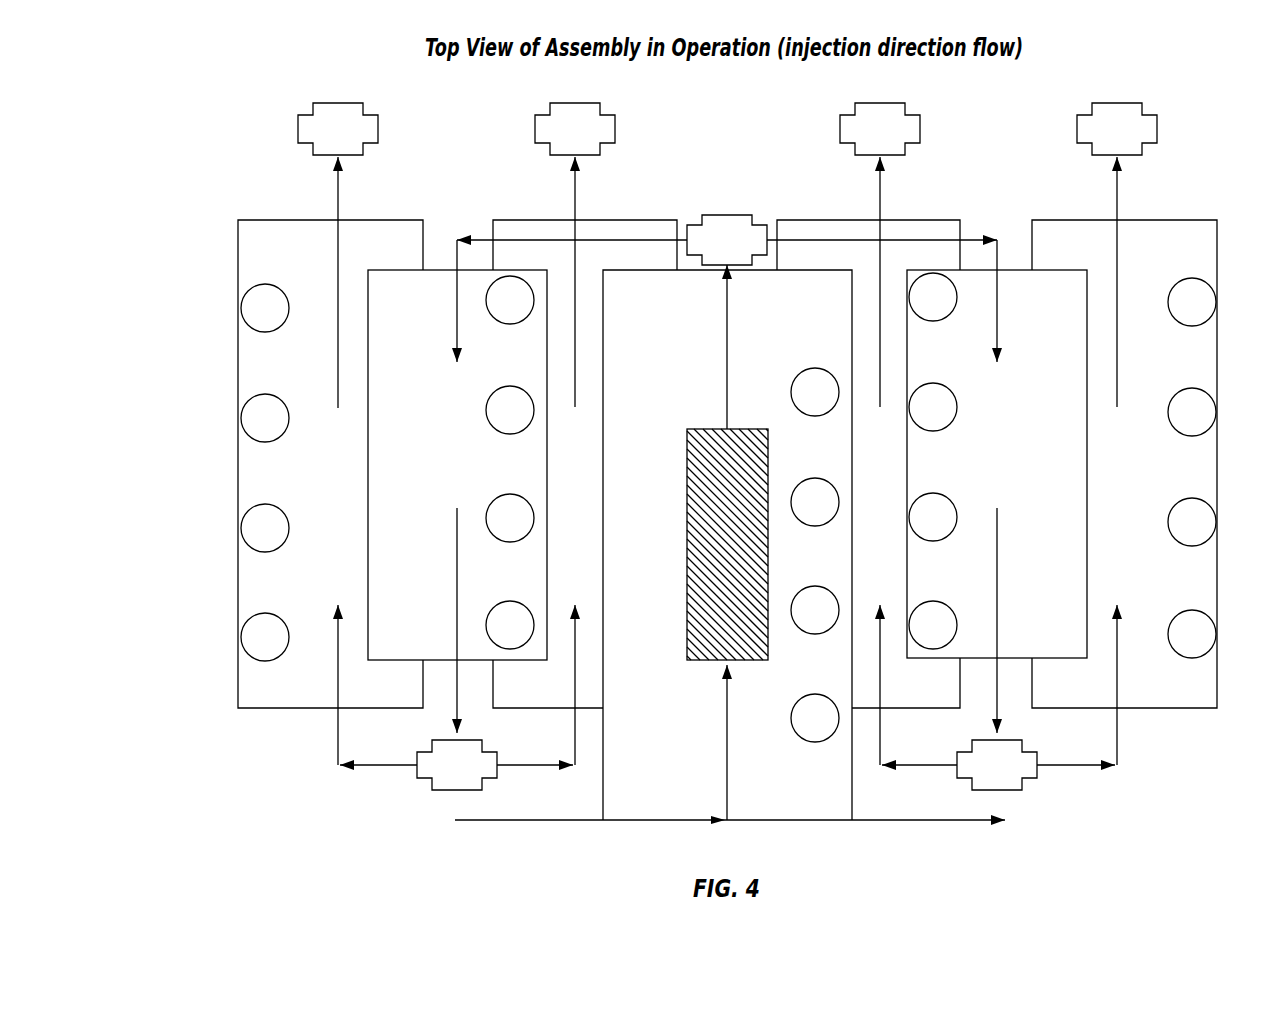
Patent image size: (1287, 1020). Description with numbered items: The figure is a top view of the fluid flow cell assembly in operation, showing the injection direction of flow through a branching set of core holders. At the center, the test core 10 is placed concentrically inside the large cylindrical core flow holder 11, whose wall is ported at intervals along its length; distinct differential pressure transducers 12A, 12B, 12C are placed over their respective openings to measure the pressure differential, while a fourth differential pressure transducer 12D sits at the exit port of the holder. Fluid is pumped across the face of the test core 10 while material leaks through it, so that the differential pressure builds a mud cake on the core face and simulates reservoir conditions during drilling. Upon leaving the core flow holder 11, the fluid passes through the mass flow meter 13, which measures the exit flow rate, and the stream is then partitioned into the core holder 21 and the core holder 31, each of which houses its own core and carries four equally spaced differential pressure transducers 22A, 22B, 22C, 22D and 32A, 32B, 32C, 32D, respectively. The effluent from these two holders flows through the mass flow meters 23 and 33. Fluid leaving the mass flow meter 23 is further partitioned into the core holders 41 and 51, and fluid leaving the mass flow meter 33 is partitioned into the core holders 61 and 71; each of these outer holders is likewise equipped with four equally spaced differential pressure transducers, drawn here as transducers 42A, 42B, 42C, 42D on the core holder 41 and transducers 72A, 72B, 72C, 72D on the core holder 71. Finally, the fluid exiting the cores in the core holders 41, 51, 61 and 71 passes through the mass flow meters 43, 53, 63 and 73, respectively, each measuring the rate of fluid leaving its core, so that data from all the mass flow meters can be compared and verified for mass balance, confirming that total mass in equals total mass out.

The test core 10 is at (740, 557).
The core flow holder 11 is at (672, 387).
The differential pressure transducer 12A is at (823, 369).
The differential pressure transducer 12B is at (827, 480).
The differential pressure transducer 12C is at (828, 633).
The differential pressure transducer 12D is at (828, 741).
The mass flow meter 13 is at (723, 215).
The core holder 21 is at (470, 478).
The differential pressure transducer 22A is at (487, 306).
The differential pressure transducer 22B is at (487, 406).
The differential pressure transducer 22C is at (487, 530).
The differential pressure transducer 22D is at (488, 632).
The mass flow meter 23 is at (444, 790).
The core holder 31 is at (1010, 478).
The differential pressure transducer 32A is at (940, 320).
The differential pressure transducer 32B is at (936, 430).
The differential pressure transducer 32C is at (940, 540).
The differential pressure transducer 32D is at (940, 604).
The mass flow meter 33 is at (1010, 790).
The core holder 41 is at (342, 478).
The differential pressure transducer 42A is at (245, 292).
The differential pressure transducer 42B is at (245, 402).
The differential pressure transducer 42C is at (245, 548).
The differential pressure transducer 42D is at (245, 656).
The mass flow meter 43 is at (325, 103).
The core holder 51 is at (592, 478).
The mass flow meter 53 is at (563, 103).
The core holder 61 is at (890, 478).
The mass flow meter 63 is at (890, 103).
The core holder 71 is at (1140, 475).
The differential pressure transducer 72A is at (1207, 282).
The differential pressure transducer 72B is at (1207, 392).
The differential pressure transducer 72C is at (1207, 544).
The differential pressure transducer 72D is at (1207, 655).
The mass flow meter 73 is at (1133, 103).